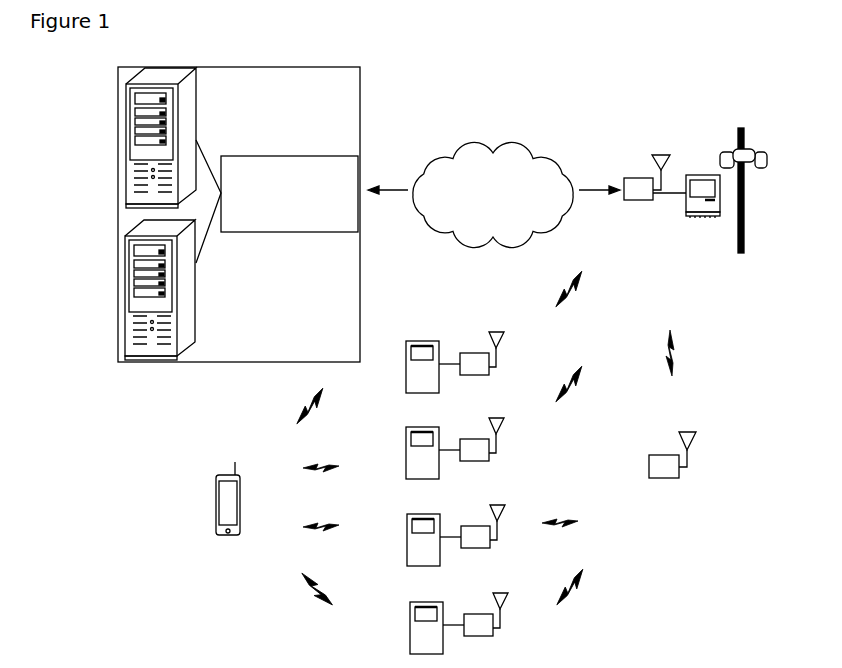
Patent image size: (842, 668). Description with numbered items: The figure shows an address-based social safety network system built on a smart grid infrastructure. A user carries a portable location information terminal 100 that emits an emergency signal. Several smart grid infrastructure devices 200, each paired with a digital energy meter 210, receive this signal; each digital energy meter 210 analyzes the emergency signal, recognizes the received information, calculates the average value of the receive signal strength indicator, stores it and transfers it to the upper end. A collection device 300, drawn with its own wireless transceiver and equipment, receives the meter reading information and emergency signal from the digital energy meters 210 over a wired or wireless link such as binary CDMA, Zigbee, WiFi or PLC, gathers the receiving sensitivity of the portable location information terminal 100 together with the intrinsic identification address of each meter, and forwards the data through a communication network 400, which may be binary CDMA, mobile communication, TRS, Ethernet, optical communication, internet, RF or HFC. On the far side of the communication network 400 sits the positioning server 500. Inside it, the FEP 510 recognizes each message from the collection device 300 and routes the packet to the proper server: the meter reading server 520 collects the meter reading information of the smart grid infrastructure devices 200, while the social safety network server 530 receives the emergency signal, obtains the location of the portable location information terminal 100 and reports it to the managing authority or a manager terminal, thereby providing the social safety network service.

The portable location information terminal 100 is at (216, 530).
The smart grid infrastructure device 200 is at (438, 375).
The digital energy meter 210 is at (468, 353).
The collection device 300 is at (697, 216).
The communication network 400 is at (515, 148).
The positioning server 500 is at (358, 121).
The FEP (Front End Protocol) 510 is at (257, 232).
The meter reading server 520 is at (196, 93).
The social safety network server 530 is at (157, 360).